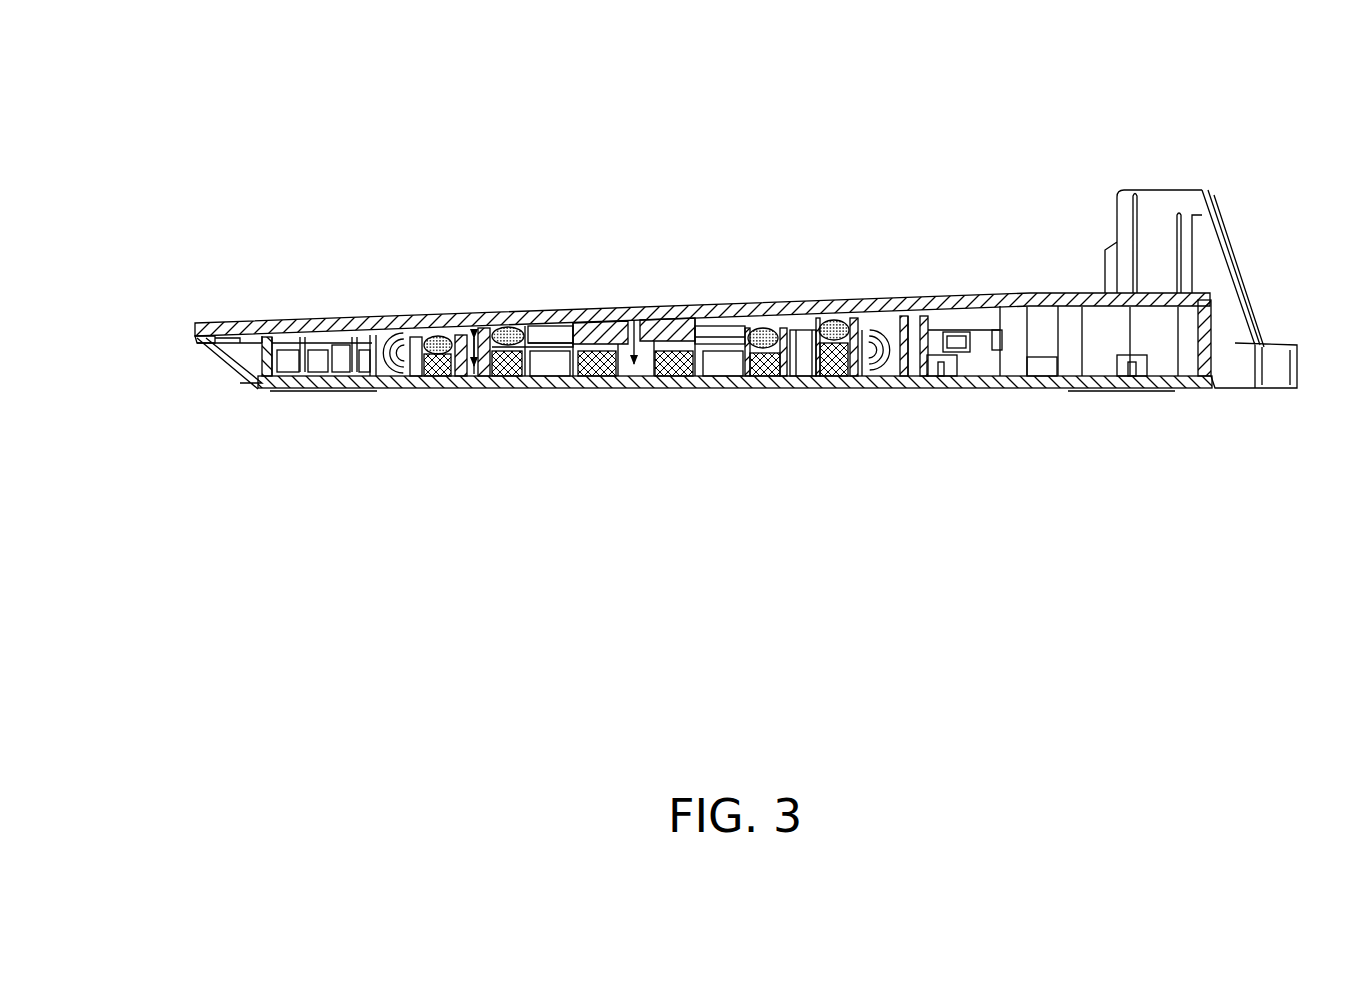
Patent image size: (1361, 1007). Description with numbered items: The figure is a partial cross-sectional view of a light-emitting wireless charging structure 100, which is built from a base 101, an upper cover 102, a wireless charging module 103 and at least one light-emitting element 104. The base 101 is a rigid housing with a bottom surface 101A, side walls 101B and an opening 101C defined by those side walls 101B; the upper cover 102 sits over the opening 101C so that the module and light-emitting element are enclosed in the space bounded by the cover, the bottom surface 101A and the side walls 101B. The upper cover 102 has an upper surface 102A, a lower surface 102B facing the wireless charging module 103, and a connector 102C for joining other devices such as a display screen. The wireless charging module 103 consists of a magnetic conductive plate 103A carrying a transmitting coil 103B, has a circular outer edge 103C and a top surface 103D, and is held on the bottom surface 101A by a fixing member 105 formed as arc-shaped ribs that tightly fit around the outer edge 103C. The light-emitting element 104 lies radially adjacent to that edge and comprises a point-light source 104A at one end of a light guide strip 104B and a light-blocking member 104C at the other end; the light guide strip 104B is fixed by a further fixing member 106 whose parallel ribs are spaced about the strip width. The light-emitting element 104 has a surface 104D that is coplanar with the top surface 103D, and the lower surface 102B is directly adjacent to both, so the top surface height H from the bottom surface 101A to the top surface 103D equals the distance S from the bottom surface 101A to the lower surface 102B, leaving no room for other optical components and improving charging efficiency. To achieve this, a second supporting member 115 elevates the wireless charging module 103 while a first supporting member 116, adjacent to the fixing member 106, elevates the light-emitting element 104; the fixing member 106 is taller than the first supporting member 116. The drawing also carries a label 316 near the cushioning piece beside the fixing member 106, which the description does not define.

The light-emitting wireless charging structure 100 is at (107, 89).
The base 101 is at (268, 573).
The bottom surface 101A is at (1006, 368).
The side walls 101B is at (236, 370).
The opening 101C is at (194, 342).
The upper cover 102 is at (395, 573).
The upper surface 102A is at (1033, 291).
The lower surface 102B is at (1128, 333).
The connector 102C is at (1210, 213).
The wireless charging module 103 is at (533, 558).
The magnetic conductive plate 103A is at (720, 323).
The transmitting coil 103B is at (617, 318).
The circular outer edge 103C is at (532, 325).
The top surface 103D is at (552, 325).
The light-emitting element 104 is at (670, 558).
The point-light source 104A is at (888, 335).
The light guide strip 104B is at (432, 327).
The light-blocking member 104C is at (371, 327).
The surface 104D is at (442, 325).
The fixing member 105 is at (573, 380).
The fixing member 106 is at (797, 378).
The second supporting member 115 is at (603, 378).
The first supporting member 116 is at (500, 378).
The elastic member 316 is at (761, 378).
The top surface height H is at (474, 330).
The distance S is at (635, 319).